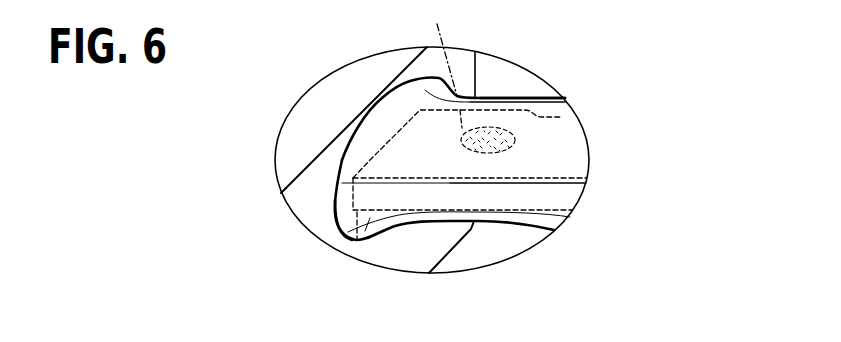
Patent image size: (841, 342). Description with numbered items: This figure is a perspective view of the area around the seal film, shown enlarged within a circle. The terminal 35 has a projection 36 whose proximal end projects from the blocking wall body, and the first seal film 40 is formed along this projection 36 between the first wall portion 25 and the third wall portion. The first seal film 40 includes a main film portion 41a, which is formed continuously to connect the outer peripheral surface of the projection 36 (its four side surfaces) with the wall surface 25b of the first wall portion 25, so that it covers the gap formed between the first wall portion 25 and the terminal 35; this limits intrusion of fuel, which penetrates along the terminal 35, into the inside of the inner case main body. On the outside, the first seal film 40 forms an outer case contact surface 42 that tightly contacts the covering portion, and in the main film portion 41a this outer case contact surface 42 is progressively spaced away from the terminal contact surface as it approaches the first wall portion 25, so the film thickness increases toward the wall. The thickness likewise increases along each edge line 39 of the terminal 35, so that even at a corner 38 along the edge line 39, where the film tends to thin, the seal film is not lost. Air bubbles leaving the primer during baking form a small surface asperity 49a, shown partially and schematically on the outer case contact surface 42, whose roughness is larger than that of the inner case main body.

The first wall portion 25 is at (466, 76).
The wall surface 25b is at (412, 252).
The terminal 35 is at (560, 117).
The projection 36 is at (505, 140).
The corner 38 is at (332, 216).
The edge line 39 is at (357, 240).
The first seal film 40 is at (489, 98).
The main film portion 41a is at (551, 78).
The outer case contact surface 42 is at (553, 163).
The surface asperity 49a is at (437, 24).